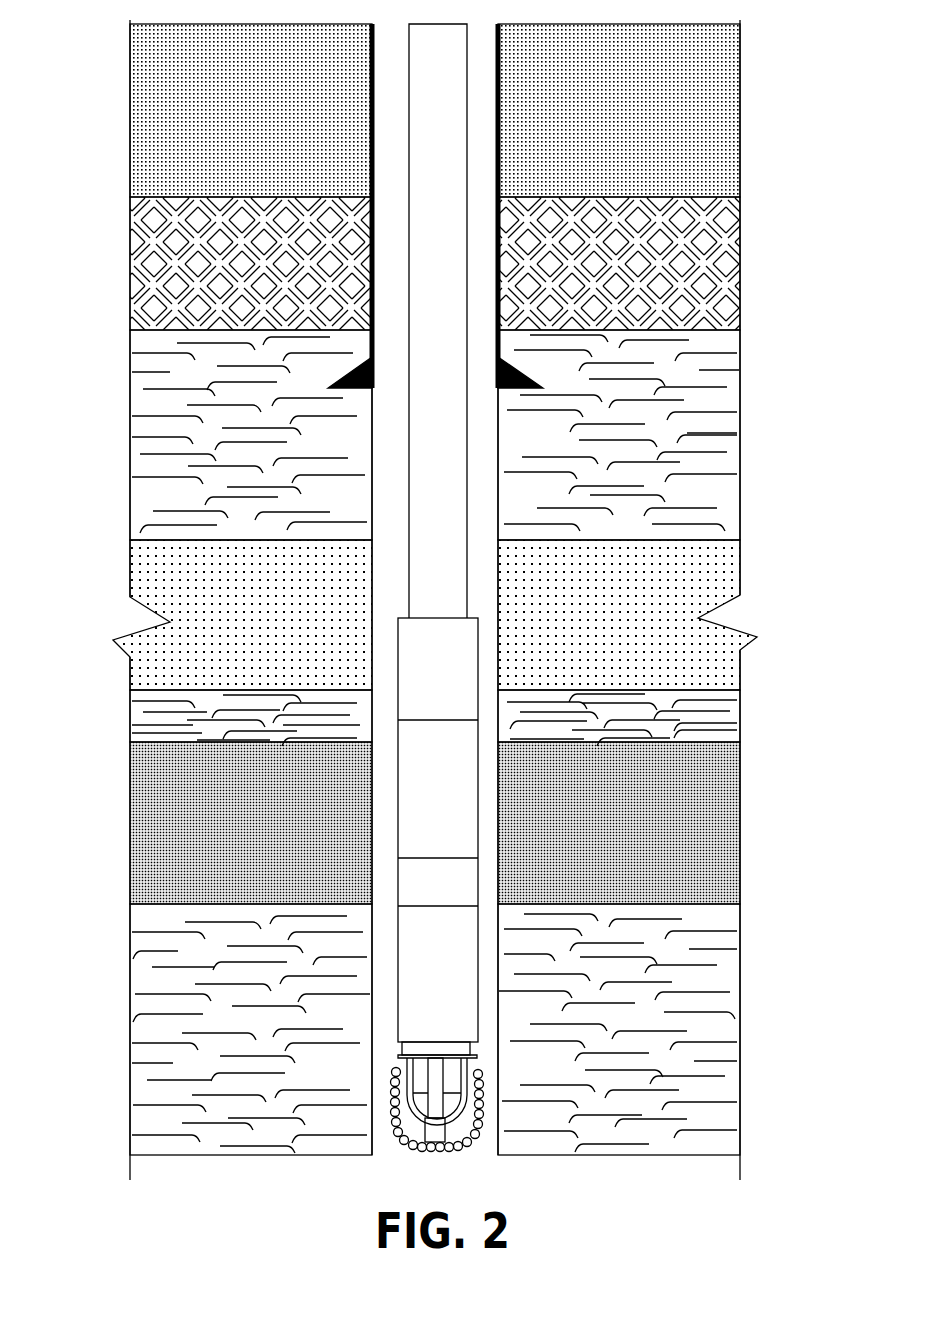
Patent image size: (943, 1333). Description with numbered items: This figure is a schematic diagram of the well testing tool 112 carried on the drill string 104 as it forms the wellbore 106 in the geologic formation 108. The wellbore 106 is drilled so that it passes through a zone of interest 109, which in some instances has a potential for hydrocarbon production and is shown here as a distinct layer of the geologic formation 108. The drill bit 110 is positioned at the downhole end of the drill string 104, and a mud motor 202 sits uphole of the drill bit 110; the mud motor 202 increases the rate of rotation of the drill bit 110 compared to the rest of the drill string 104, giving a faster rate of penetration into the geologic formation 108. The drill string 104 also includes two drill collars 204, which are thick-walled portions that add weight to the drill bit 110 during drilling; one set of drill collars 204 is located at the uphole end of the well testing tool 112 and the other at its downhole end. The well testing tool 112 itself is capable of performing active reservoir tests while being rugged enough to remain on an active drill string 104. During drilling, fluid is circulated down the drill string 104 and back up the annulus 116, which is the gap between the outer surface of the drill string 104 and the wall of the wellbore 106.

The drill string 104 is at (409, 445).
The wellbore 106 is at (372, 522).
The annulus 116 is at (485, 443).
The drill collars 204 is at (398, 665).
The well testing tool 112 is at (398, 812).
The mud motor 202 is at (398, 1014).
The drill bit 110 is at (467, 1098).
The zone of interest 109 is at (695, 870).
The geologic formation 108 is at (725, 1003).